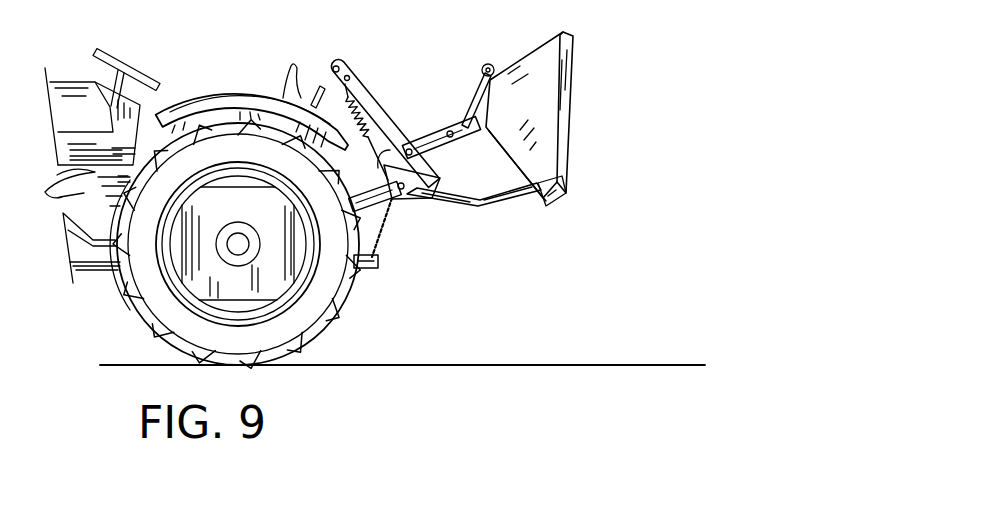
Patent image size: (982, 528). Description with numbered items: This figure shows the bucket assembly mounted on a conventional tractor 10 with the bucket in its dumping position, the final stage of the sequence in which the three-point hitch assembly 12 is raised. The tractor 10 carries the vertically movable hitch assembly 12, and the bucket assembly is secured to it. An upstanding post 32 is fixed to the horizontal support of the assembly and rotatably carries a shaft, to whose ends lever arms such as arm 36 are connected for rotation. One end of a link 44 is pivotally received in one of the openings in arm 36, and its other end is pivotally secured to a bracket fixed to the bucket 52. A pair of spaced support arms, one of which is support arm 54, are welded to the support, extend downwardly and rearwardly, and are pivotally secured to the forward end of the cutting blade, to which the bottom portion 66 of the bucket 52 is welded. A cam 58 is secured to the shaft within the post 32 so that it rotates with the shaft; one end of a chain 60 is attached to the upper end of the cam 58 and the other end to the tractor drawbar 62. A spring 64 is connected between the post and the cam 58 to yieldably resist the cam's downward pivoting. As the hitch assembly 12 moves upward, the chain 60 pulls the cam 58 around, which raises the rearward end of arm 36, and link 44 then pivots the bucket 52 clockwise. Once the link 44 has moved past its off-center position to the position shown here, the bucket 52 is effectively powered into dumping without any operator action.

The tractor 10 is at (247, 64).
The three-point hitch assembly 12 is at (314, 84).
The upstanding post 32 is at (366, 93).
The lever arm 36 is at (436, 130).
The link 44 is at (474, 92).
The bucket 52 is at (538, 97).
The support arm 54 is at (500, 207).
The cam 58 is at (412, 188).
The chain 60 is at (382, 245).
The tractor drawbar 62 is at (368, 270).
The spring 64 is at (370, 118).
The bottom portion 66 is at (501, 142).